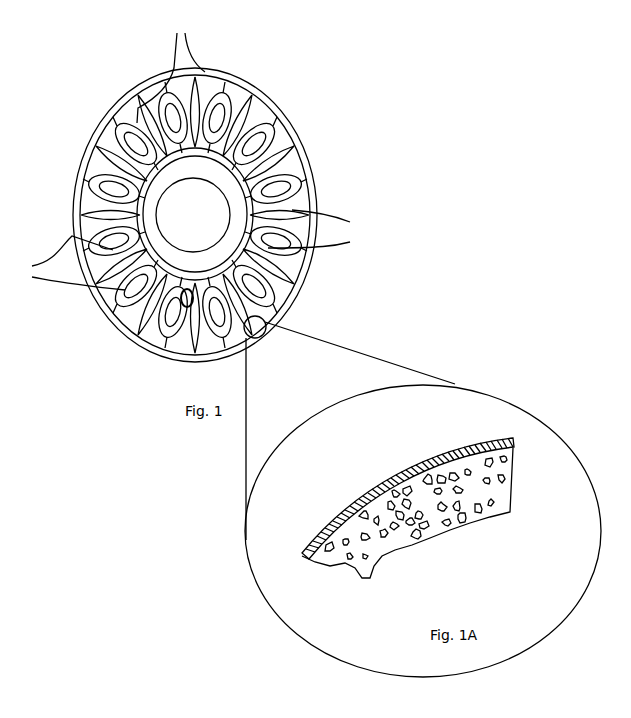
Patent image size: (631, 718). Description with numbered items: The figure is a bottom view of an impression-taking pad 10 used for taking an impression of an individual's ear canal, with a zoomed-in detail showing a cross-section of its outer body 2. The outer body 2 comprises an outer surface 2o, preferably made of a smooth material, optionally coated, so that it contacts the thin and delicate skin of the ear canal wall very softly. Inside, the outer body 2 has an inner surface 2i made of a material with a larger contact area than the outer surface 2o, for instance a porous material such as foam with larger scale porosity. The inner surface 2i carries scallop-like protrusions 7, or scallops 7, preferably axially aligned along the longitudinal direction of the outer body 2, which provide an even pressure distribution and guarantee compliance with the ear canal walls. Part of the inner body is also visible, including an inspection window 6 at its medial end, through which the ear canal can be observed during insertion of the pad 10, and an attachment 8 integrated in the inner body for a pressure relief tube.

In FIG. 1, the impression-taking pad 10 is at (420, 93).
In FIG. 1, the inspection window 6 is at (173, 202).
In FIG. 1, the scallop-like protrusions 7 is at (192, 151).
In FIG. 1, the attachment 8 is at (194, 300).
In FIG. 1A, the outer body 2 is at (375, 523).
In FIG. 1A, the outer surface 2o is at (445, 452).
In FIG. 1A, the inner surface 2i is at (460, 530).